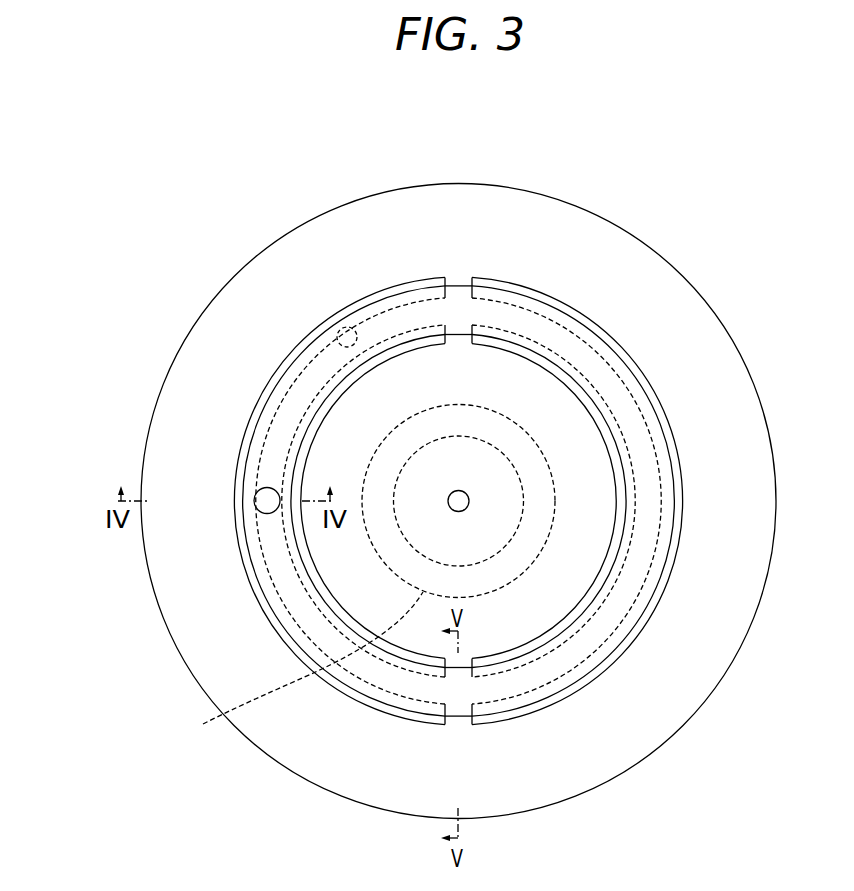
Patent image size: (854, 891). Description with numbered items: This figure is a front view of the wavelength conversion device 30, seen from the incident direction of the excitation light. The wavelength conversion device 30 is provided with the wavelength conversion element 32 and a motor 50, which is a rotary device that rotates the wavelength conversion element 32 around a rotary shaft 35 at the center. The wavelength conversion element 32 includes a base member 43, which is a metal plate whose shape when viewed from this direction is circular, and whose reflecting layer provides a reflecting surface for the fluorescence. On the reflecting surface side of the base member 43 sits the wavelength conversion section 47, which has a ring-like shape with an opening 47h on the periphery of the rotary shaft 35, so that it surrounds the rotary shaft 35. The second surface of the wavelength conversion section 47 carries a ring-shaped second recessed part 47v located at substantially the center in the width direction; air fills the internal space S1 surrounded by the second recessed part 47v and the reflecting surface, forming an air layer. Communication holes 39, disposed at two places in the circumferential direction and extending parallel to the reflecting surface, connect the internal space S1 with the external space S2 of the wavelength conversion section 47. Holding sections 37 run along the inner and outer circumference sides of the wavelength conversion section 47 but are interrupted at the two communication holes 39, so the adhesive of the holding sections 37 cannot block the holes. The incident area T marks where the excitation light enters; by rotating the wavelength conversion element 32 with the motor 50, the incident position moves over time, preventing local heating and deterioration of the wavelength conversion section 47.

The wavelength conversion device 30 is at (323, 199).
The wavelength conversion element 32 is at (745, 318).
The rotary shaft 35 is at (469, 501).
The holding sections 37 is at (654, 400).
The communication holes 39 is at (460, 278).
The base member 43 is at (608, 237).
The wavelength conversion section 47 is at (305, 625).
The second recessed part 47v is at (339, 330).
The opening 47h is at (539, 374).
The motor 50 is at (297, 667).
The incident area T is at (266, 487).
The internal space S1 is at (309, 358).
The external space S2 is at (122, 210).